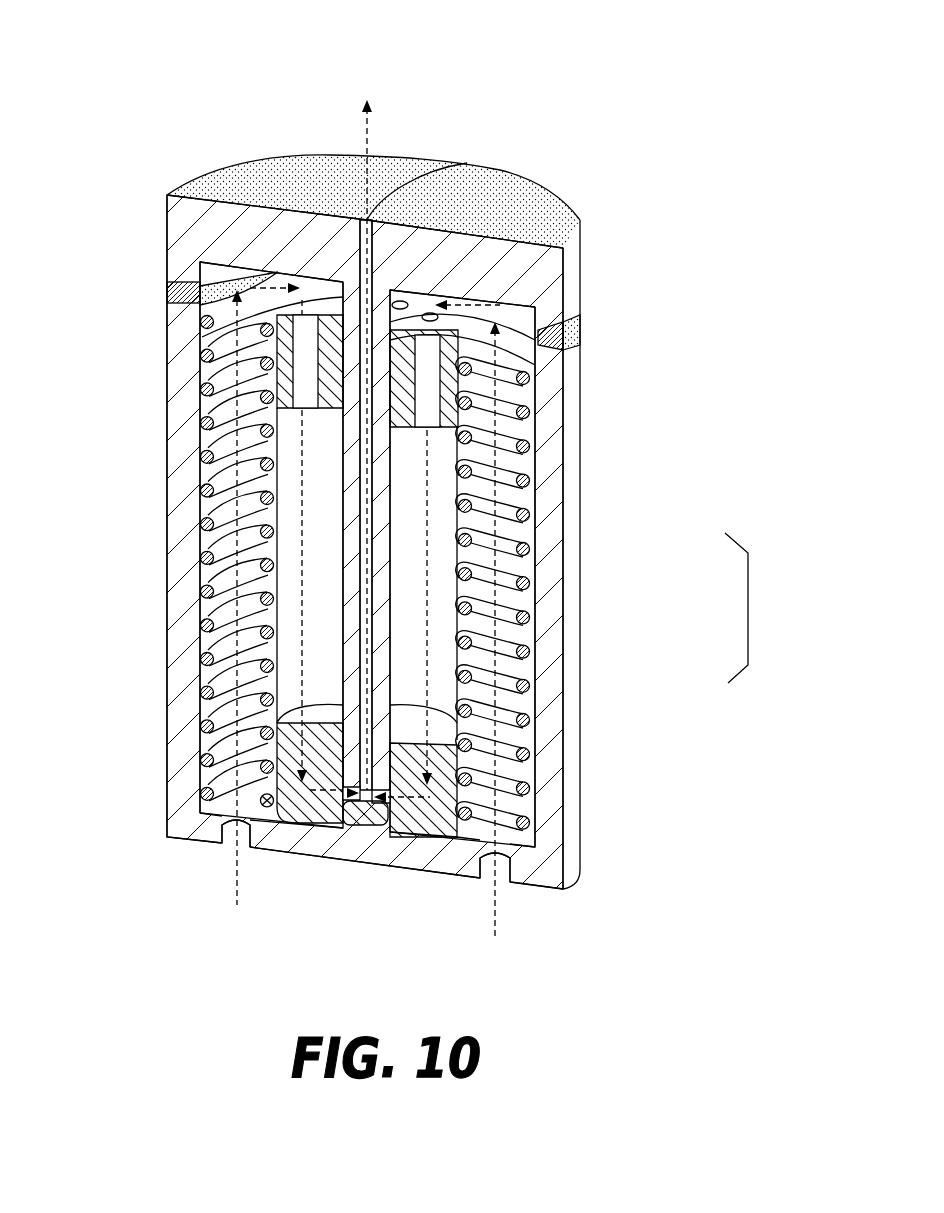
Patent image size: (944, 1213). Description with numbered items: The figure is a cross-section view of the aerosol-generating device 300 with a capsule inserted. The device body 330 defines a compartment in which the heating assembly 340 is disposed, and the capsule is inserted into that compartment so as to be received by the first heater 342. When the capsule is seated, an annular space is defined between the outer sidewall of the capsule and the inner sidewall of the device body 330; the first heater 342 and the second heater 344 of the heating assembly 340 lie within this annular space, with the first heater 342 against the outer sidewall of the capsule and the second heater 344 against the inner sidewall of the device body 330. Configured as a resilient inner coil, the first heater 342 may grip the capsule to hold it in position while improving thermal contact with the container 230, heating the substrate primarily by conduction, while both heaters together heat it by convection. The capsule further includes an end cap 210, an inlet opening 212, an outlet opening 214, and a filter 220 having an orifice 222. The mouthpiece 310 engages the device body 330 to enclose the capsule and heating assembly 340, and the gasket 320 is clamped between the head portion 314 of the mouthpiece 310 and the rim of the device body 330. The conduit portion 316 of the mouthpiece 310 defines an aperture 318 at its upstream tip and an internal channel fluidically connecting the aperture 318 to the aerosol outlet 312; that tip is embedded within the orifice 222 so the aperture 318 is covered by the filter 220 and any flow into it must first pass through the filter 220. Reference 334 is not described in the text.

The aerosol-generating device 300 is at (448, 31).
The mouthpiece 310 is at (220, 170).
The aerosol outlet 312 is at (467, 166).
The head portion 314 is at (497, 262).
The conduit portion 316 is at (387, 497).
The aperture 318 is at (377, 800).
The gasket 320 is at (167, 295).
The device body 330 is at (167, 537).
The housing base 334 is at (563, 890).
The end cap 210 is at (437, 305).
The inlet opening 212 is at (460, 347).
The outlet opening 214 is at (445, 382).
The filter 220 is at (437, 760).
The orifice 222 is at (495, 830).
The container 230 is at (478, 692).
The heating assembly 340 is at (748, 607).
The first heater 342 is at (470, 590).
The second heater 344 is at (505, 685).